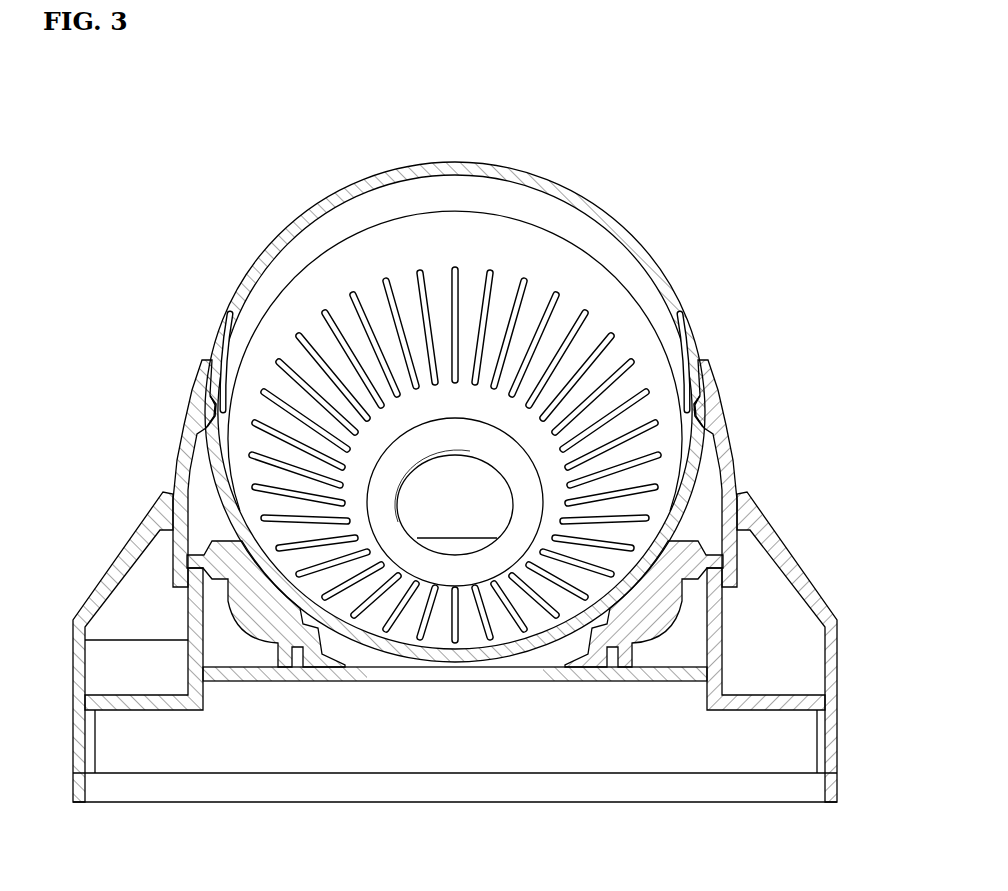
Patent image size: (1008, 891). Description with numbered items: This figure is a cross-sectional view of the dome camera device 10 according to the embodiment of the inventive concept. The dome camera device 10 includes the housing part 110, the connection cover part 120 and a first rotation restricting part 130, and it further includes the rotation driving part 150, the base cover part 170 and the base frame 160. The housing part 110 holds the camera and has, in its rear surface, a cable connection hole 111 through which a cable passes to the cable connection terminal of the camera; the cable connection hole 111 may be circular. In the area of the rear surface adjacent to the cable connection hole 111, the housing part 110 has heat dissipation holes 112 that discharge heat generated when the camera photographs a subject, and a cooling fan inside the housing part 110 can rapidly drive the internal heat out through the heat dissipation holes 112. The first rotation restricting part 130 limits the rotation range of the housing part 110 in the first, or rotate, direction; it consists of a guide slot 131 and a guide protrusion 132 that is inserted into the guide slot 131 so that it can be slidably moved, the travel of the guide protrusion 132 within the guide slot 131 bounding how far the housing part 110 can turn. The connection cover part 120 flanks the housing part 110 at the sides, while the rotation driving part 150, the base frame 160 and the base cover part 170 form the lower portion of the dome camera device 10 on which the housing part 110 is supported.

The dome camera device 10 is at (481, 77).
The housing part 110 is at (350, 190).
The cable connection hole 111 is at (468, 480).
The heat dissipation holes 112 is at (628, 365).
The connection cover part 120 is at (180, 462).
The first rotation restricting part 130 is at (96, 323).
The guide slot 131 is at (222, 342).
The guide protrusion 132 is at (206, 413).
The rotation driving part 150 is at (600, 645).
The base frame 160 is at (747, 700).
The base cover part 170 is at (792, 558).